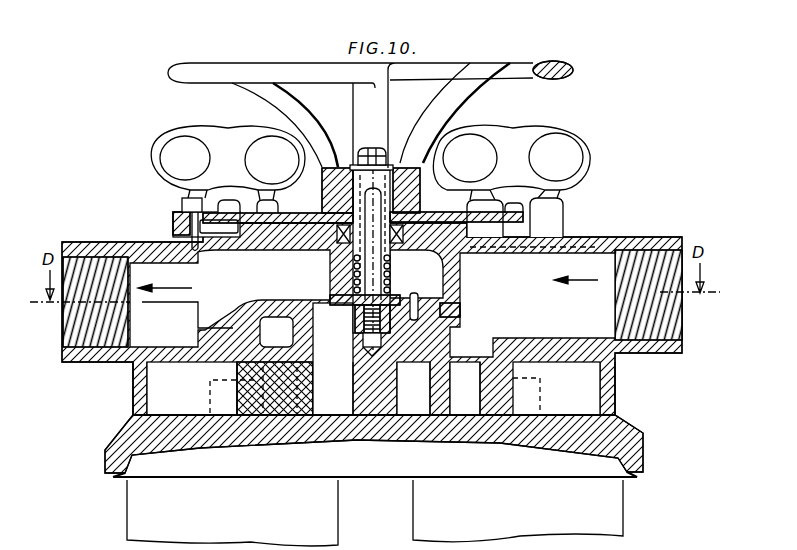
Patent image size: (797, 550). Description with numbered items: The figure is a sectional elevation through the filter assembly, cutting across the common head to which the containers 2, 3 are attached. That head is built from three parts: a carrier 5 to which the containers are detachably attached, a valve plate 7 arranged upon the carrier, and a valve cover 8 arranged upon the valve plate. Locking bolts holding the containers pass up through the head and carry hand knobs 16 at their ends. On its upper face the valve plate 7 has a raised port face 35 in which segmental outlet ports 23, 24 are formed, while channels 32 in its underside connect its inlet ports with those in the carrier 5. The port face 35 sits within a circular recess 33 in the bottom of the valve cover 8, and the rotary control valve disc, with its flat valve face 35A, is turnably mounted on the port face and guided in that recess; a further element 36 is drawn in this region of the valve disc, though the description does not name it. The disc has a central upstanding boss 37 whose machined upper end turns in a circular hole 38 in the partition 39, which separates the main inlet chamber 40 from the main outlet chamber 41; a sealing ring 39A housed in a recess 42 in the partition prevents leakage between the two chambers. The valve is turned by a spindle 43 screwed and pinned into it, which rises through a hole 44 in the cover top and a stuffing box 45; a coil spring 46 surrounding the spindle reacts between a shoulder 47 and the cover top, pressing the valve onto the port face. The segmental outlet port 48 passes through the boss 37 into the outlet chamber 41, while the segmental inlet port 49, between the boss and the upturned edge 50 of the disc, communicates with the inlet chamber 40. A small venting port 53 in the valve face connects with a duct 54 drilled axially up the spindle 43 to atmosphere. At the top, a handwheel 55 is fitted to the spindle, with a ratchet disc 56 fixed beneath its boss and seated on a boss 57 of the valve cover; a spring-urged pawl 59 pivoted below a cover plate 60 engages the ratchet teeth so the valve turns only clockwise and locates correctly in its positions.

The container 2 is at (147, 520).
The container 3 is at (617, 505).
The carrier 5 is at (637, 448).
The valve plate 7 is at (617, 387).
The valve cover 8 is at (583, 236).
The hand knob 16 is at (218, 130).
The segmental outlet port 23 is at (323, 412).
The segmental outlet port 24 is at (420, 410).
The channel 32 is at (270, 412).
The circular recess 33 is at (533, 345).
The port face 35 is at (303, 353).
The valve face 35A is at (365, 382).
The bore 36 is at (473, 404).
The upstanding boss 37 is at (305, 325).
The circular hole 38 is at (398, 355).
The partition 39 is at (291, 305).
The sealing ring 39A is at (458, 333).
The main inlet chamber 40 is at (262, 322).
The main outlet chamber 41 is at (472, 296).
The recess 42 is at (278, 332).
The spindle 43 is at (355, 275).
The hole 44 is at (380, 260).
The stuffing box 45 is at (345, 256).
The coil spring 46 is at (443, 288).
The shoulder 47 is at (345, 297).
The segmental outlet port 48 is at (318, 352).
The segmental inlet port 49 is at (475, 405).
The upturned edge 50 is at (490, 342).
The venting port 53 is at (430, 388).
The duct 54 is at (432, 192).
The handwheel 55 is at (236, 70).
The ratchet disc 56 is at (523, 212).
The boss 57 is at (318, 214).
The pawl 59 is at (217, 232).
The cover plate 60 is at (182, 208).